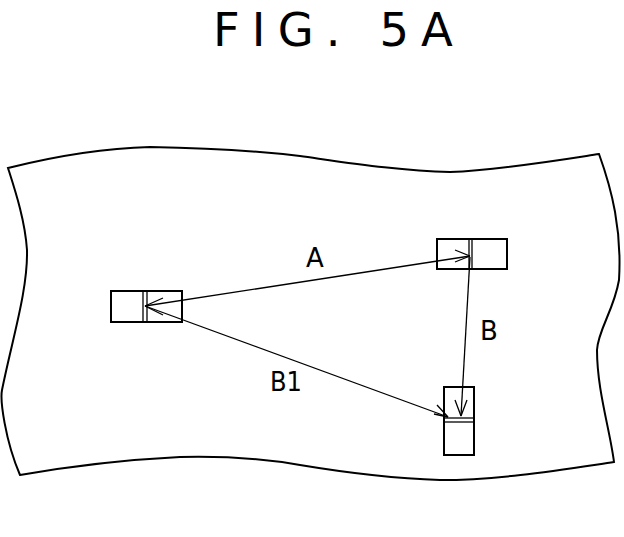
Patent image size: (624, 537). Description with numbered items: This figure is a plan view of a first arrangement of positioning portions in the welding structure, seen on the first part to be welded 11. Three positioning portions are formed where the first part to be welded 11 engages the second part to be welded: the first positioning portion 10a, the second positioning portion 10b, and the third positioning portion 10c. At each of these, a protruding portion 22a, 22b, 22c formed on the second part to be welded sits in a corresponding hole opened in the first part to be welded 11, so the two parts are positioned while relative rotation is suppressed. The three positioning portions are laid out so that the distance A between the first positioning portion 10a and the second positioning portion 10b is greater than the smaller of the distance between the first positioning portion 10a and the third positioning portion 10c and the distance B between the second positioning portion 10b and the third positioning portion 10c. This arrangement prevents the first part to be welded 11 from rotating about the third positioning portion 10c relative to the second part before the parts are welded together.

The first part to be welded 11 is at (112, 436).
The first positioning portion 10a is at (122, 282).
The second positioning portion 10b is at (517, 250).
The third positioning portion 10c is at (492, 410).
The protruding portion 22a is at (148, 302).
The protruding portion 22b is at (465, 255).
The protruding portion 22c is at (457, 420).